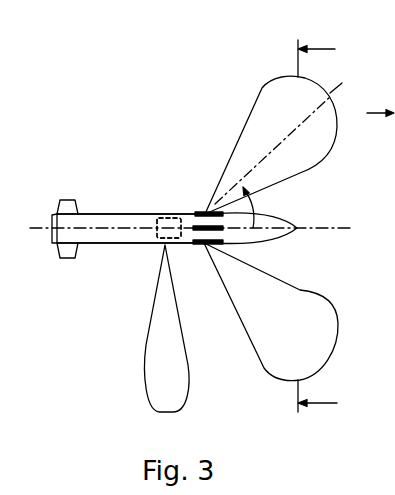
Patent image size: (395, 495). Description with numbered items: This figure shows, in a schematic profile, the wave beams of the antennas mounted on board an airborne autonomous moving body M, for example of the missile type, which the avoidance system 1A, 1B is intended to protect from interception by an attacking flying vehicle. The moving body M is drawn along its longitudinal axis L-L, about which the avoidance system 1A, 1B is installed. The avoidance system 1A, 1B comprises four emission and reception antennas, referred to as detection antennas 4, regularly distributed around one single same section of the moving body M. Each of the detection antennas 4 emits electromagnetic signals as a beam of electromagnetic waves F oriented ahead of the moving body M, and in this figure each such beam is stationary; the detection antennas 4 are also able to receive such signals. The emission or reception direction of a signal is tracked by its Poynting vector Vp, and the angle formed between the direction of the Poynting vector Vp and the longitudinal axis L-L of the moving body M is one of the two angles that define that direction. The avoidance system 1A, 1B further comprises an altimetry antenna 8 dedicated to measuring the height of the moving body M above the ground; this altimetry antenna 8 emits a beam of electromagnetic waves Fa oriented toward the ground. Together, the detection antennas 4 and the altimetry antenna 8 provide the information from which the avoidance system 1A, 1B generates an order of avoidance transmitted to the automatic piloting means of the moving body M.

The avoidance system 1A is at (162, 211).
The avoidance system 1B is at (169, 228).
The detection antennas 4 is at (194, 210).
The altimetry antenna 8 is at (155, 245).
The longitudinal axis L is at (40, 231).
The moving body M is at (90, 245).
The beam of electromagnetic waves F is at (278, 97).
The beam of electromagnetic waves Fa is at (147, 377).
The velocity V is at (317, 217).
The Poynting vector Vp is at (340, 87).